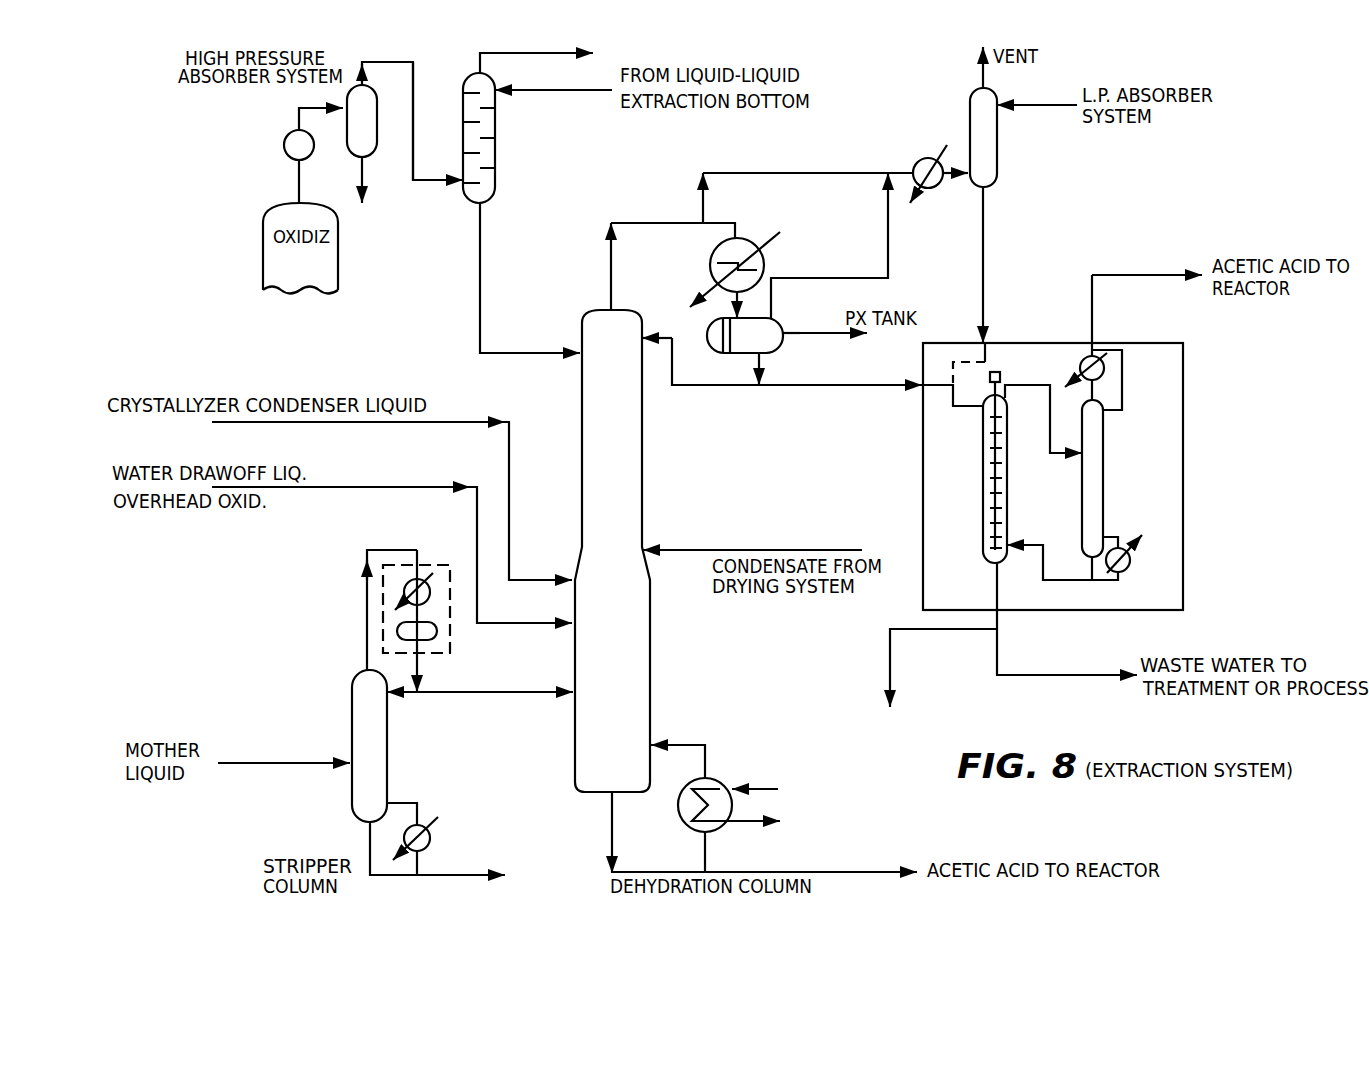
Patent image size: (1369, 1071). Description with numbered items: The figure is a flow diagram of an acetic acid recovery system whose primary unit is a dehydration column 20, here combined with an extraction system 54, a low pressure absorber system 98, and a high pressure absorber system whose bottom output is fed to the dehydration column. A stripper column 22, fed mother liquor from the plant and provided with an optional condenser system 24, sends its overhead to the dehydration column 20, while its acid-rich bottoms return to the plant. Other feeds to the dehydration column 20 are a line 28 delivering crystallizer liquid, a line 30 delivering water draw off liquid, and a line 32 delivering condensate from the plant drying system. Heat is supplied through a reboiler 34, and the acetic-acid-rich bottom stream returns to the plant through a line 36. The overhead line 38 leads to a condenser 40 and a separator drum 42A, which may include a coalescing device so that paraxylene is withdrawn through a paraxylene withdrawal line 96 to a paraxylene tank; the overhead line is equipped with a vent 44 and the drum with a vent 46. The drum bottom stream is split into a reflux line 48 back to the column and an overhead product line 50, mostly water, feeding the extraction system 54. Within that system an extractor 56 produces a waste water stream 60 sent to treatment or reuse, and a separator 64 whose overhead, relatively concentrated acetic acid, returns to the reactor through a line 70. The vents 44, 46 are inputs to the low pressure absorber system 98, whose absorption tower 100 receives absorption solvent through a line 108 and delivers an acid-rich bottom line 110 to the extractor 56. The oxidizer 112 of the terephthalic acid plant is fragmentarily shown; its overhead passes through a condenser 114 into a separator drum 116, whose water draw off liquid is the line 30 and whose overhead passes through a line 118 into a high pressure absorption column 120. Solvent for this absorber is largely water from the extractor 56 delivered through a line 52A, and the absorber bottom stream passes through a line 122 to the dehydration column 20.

The dehydration column 20 is at (652, 698).
The stripper column 22 is at (388, 745).
The condenser system 24 is at (380, 620).
The line 28 is at (512, 480).
The line 30 is at (365, 163).
The line 32 is at (695, 549).
The reboiler 34 is at (720, 778).
The line 36 is at (788, 872).
The overhead line 38 is at (608, 277).
The condenser 40 is at (752, 237).
The separator drum 42A is at (783, 342).
The vent 44 is at (702, 203).
The vent 46 is at (813, 250).
The reflux line 48 is at (708, 387).
The overhead product line 50 is at (843, 387).
The line 52A is at (561, 92).
The extraction system 54 is at (922, 507).
The extractor 56 is at (983, 485).
The waste water stream 60 is at (995, 653).
The separator 64 is at (1103, 468).
The line 70 is at (1092, 313).
The paraxylene withdrawal line 96 is at (798, 333).
The low pressure absorber system 98 is at (957, 127).
The absorption tower 100 is at (998, 173).
The line 108 is at (1045, 107).
The bottom line 110 is at (982, 265).
The oxidizer 112 is at (338, 263).
The condenser 114 is at (284, 153).
The separator drum 116 is at (345, 140).
The line 118 is at (413, 73).
The high pressure absorption column 120 is at (495, 155).
The line 122 is at (480, 257).